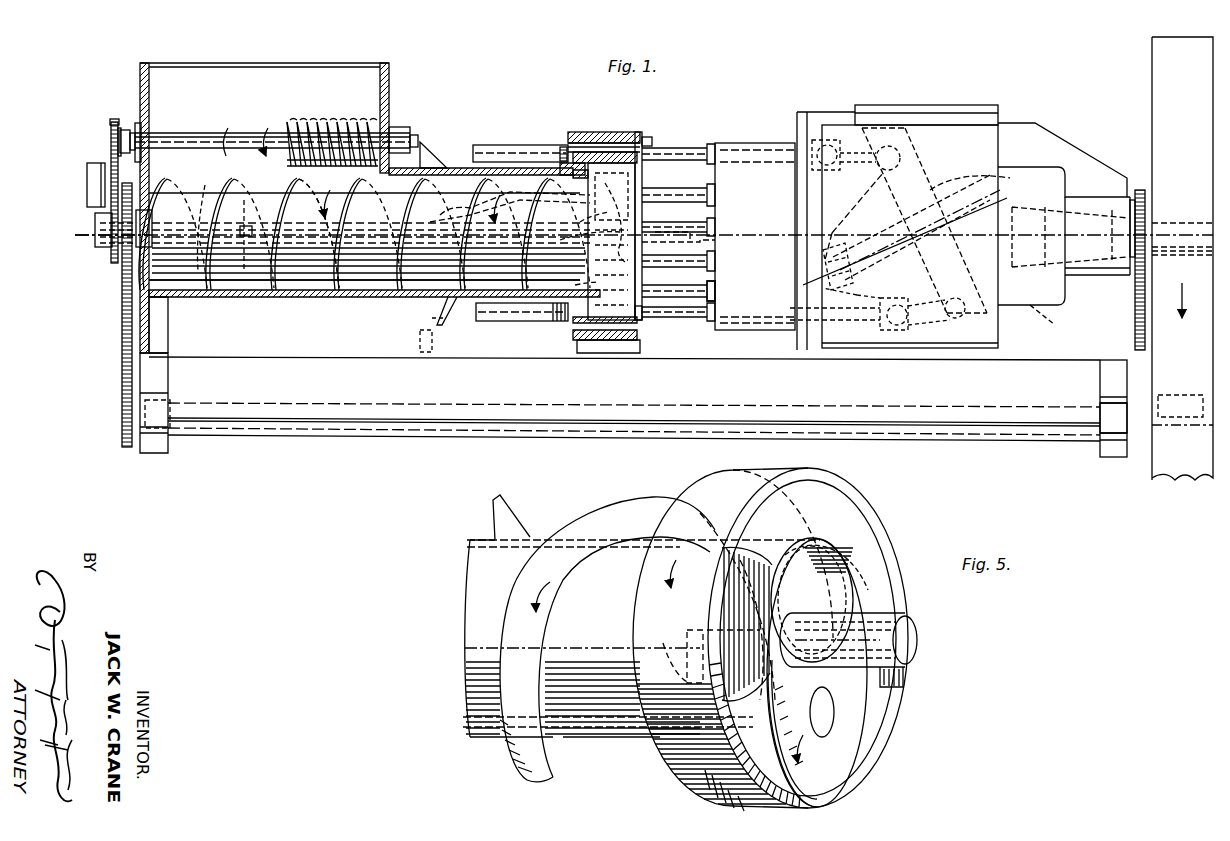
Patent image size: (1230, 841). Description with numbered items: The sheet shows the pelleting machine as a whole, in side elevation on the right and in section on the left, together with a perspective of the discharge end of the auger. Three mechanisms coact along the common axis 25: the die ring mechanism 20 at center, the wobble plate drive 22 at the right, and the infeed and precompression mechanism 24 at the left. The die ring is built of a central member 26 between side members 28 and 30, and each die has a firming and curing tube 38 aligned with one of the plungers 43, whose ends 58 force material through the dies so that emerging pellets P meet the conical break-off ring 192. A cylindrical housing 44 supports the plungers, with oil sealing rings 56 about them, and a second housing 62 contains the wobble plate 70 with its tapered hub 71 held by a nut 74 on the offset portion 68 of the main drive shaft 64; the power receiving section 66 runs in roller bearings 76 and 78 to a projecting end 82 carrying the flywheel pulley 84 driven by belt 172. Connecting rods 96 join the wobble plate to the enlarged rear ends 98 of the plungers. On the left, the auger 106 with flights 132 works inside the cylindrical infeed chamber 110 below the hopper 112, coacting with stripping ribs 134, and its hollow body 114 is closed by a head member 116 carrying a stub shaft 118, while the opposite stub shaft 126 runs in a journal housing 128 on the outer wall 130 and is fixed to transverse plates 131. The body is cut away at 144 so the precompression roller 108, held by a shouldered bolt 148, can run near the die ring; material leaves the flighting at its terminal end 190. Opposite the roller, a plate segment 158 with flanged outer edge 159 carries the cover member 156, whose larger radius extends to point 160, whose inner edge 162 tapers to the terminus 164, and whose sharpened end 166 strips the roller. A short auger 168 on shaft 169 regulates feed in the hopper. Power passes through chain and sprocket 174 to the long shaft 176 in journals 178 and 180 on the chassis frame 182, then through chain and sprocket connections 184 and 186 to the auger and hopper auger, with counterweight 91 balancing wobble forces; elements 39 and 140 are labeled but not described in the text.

In FIG. 1, the die ring mechanism 20 is at (712, 119).
In FIG. 1, the wobble plate drive 22 is at (945, 137).
In FIG. 1, the infeed and precompression mechanism 24 is at (172, 270).
In FIG. 1, the axis 25 is at (78, 238).
In FIG. 1, the central member 26 is at (618, 130).
In FIG. 1, the side member 28 is at (572, 132).
In FIG. 1, the side member 30 is at (645, 133).
In FIG. 1, the pellet firming and curing tube 38 is at (510, 150).
In FIG. 1, the threaded end 39 is at (556, 324).
In FIG. 1, the plunger 43 is at (758, 146).
In FIG. 1, the cylindrical housing 44 is at (730, 330).
In FIG. 1, the oil sealing ring 56 is at (715, 284).
In FIG. 1, the plunger end 58 is at (590, 213).
In FIG. 1, the second housing 62 is at (830, 120).
In FIG. 1, the main drive shaft 64 is at (1025, 205).
In FIG. 1, the power receiving section 66 is at (1095, 212).
In FIG. 1, the offset portion 68 is at (900, 262).
In FIG. 1, the wobble plate 70 is at (925, 163).
In FIG. 1, the tapered hub 71 is at (862, 208).
In FIG. 1, the nut 74 is at (840, 287).
In FIG. 1, the roller bearing 76 is at (1058, 307).
In FIG. 1, the roller bearing 78 is at (1118, 272).
In FIG. 1, the projecting end 82 is at (1200, 223).
In FIG. 1, the flywheel pulley 84 is at (1152, 85).
In FIG. 1, the counterweight 91 is at (87, 184).
In FIG. 1, the connecting rod 96 is at (855, 168).
In FIG. 1, the enlarged rear end 98 is at (880, 332).
In FIG. 1, the emerging pellets P is at (436, 335).
In FIG. 1, the auger 106 is at (268, 285).
In FIG. 5, the auger 106 is at (560, 503).
In FIG. 1, the precompression roller 108 is at (615, 300).
In FIG. 5, the precompression roller 108 is at (856, 771).
In FIG. 1, the cylindrical infeed chamber 110 is at (176, 298).
In FIG. 1, the hopper 112 is at (228, 66).
In FIG. 1, the auger body 114 is at (212, 290).
In FIG. 5, the auger body 114 is at (641, 638).
In FIG. 5, the head member 116 is at (828, 590).
In FIG. 1, the stub shaft 118 is at (718, 241).
In FIG. 5, the stub shaft 118 is at (916, 636).
In FIG. 1, the stub shaft 126 is at (215, 196).
In FIG. 1, the journal housing 128 is at (95, 220).
In FIG. 1, the outer wall 130 is at (83, 144).
In FIG. 1, the transverse plate 131 is at (248, 205).
In FIG. 1, the auger flight 132 is at (300, 190).
In FIG. 5, the auger flight 132 is at (530, 576).
In FIG. 1, the stripping rib 134 is at (380, 297).
In FIG. 1, the wedge 140 is at (422, 160).
In FIG. 5, the cut away portion 144 is at (702, 656).
In FIG. 5, the shouldered bolt 148 is at (823, 715).
In FIG. 1, the cover member 156 is at (600, 229).
In FIG. 5, the cover member 156 is at (850, 481).
In FIG. 5, the plate segment 158 is at (807, 495).
In FIG. 5, the flanged outer edge 159 is at (718, 613).
In FIG. 5, the point 160 is at (738, 500).
In FIG. 1, the inner edge 162 is at (615, 218).
In FIG. 5, the inner edge 162 is at (862, 613).
In FIG. 5, the cover terminus 164 is at (906, 685).
In FIG. 5, the sharpened end 166 is at (697, 791).
In FIG. 1, the short auger 168 is at (355, 128).
In FIG. 1, the shaft 169 is at (244, 137).
In FIG. 1, the belt 172 is at (1173, 463).
In FIG. 1, the chain and sprocket 174 is at (1105, 371).
In FIG. 1, the long shaft 176 is at (748, 410).
In FIG. 1, the journal 178 is at (1108, 426).
In FIG. 1, the journal 180 is at (158, 420).
In FIG. 1, the chassis frame 182 is at (250, 436).
In FIG. 1, the chain and sprocket connection 184 is at (122, 372).
In FIG. 1, the auxiliary chain and sprocket connection 186 is at (112, 145).
In FIG. 5, the terminal end 190 is at (805, 763).
In FIG. 1, the conical break-off ring 192 is at (446, 178).